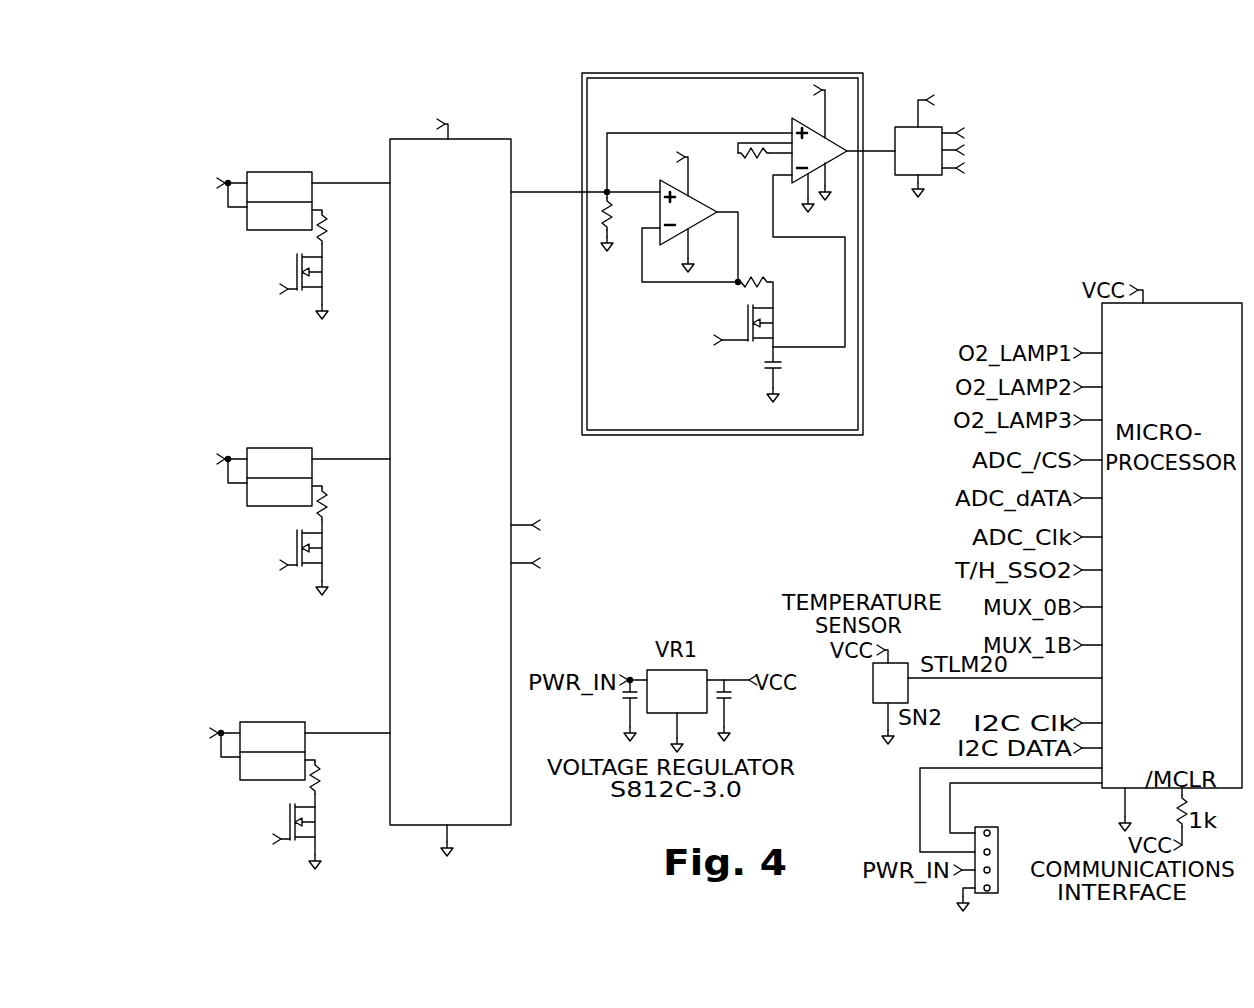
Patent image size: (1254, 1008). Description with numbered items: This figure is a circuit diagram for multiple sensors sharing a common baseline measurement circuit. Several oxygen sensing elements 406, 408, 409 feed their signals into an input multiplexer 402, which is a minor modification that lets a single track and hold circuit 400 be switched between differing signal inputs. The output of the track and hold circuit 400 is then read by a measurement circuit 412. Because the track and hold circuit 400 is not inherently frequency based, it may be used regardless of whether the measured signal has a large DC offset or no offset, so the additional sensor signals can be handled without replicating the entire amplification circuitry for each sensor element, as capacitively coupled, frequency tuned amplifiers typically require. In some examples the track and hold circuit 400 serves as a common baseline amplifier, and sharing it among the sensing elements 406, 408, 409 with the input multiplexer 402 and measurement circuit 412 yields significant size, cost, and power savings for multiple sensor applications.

The track and hold circuit 400 is at (882, 257).
The input multiplexer 402 is at (485, 137).
The oxygen sensing element 406 is at (242, 165).
The oxygen sensing element 408 is at (242, 441).
The oxygen sensor 409 is at (235, 715).
The measurement circuit 412 is at (970, 87).